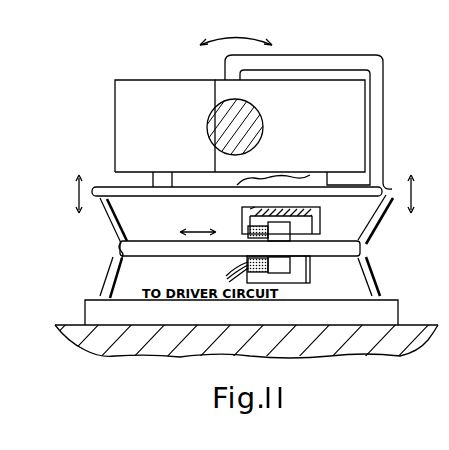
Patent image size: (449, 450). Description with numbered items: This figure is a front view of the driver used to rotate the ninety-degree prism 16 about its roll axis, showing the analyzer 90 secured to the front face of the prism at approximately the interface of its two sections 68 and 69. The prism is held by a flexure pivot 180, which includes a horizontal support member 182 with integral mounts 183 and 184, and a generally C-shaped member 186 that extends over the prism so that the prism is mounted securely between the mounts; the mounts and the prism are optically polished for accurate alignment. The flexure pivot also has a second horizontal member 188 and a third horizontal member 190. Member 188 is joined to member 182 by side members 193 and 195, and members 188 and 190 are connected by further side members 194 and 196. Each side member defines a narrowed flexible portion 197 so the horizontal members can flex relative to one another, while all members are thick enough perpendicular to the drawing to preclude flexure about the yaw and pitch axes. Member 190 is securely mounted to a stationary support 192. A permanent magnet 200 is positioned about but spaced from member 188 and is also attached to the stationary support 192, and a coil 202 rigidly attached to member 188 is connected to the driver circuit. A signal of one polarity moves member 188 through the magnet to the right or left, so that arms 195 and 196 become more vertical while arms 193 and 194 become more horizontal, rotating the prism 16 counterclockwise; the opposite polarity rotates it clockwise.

The 90° prism 16 is at (166, 58).
The prism section 68 is at (116, 118).
The prism section 69 is at (372, 121).
The analyzer 90 is at (262, 116).
The C-shaped member 186 is at (340, 58).
The mount 183 is at (194, 170).
The mount 184 is at (307, 176).
The horizontal support member 182 is at (217, 193).
The flexure pivot 180 is at (246, 236).
The side member 193 is at (118, 208).
The narrowed flexible portion 197 is at (128, 237).
The side member 194 is at (118, 254).
The side member 195 is at (372, 222).
The side member 196 is at (368, 273).
The second horizontal member 188 is at (156, 252).
The coil 202 is at (254, 237).
The permanent magnet 200 is at (299, 279).
The third horizontal member 190 is at (142, 319).
The stationary support 192 is at (316, 351).